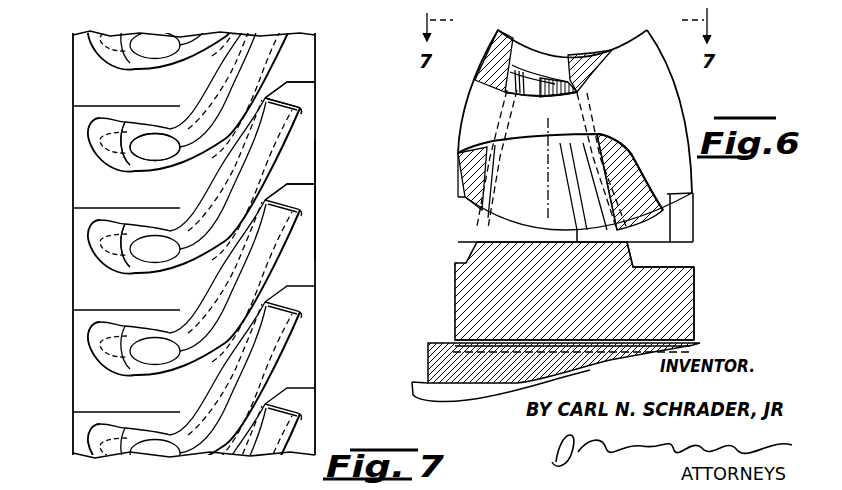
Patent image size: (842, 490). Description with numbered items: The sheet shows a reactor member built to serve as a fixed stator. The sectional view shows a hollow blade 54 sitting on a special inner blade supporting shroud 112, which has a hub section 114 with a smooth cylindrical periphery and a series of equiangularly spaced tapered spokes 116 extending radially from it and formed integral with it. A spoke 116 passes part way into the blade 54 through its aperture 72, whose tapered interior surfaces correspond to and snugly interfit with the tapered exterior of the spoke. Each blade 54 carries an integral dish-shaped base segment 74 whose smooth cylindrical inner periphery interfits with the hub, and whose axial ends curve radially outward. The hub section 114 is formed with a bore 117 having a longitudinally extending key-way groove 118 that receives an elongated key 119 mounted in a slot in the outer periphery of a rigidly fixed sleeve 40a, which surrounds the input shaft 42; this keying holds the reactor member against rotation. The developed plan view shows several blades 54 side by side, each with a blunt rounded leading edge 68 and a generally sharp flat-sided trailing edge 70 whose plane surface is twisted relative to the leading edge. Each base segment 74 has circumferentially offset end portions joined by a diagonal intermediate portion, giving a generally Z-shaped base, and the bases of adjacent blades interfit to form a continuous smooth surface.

In FIG. 7, the blade 54 is at (82, 128).
In FIG. 6, the blade 54 is at (694, 99).
In FIG. 7, the leading edge 68 is at (130, 162).
In FIG. 7, the aperture 72 is at (140, 168).
In FIG. 7, the trailing edge 70 is at (312, 51).
In FIG. 7, the base segment 74 is at (306, 171).
In FIG. 6, the base segment 74 is at (680, 222).
In FIG. 6, the inner blade supporting shroud 112 is at (702, 258).
In FIG. 6, the hub section 114 is at (680, 297).
In FIG. 6, the spoke 116 is at (541, 75).
In FIG. 6, the bore 117 is at (583, 343).
In FIG. 6, the key-way groove 118 is at (696, 322).
In FIG. 6, the key 119 is at (456, 343).
In FIG. 6, the sleeve 40a is at (428, 358).
In FIG. 6, the input shaft 42 is at (412, 389).